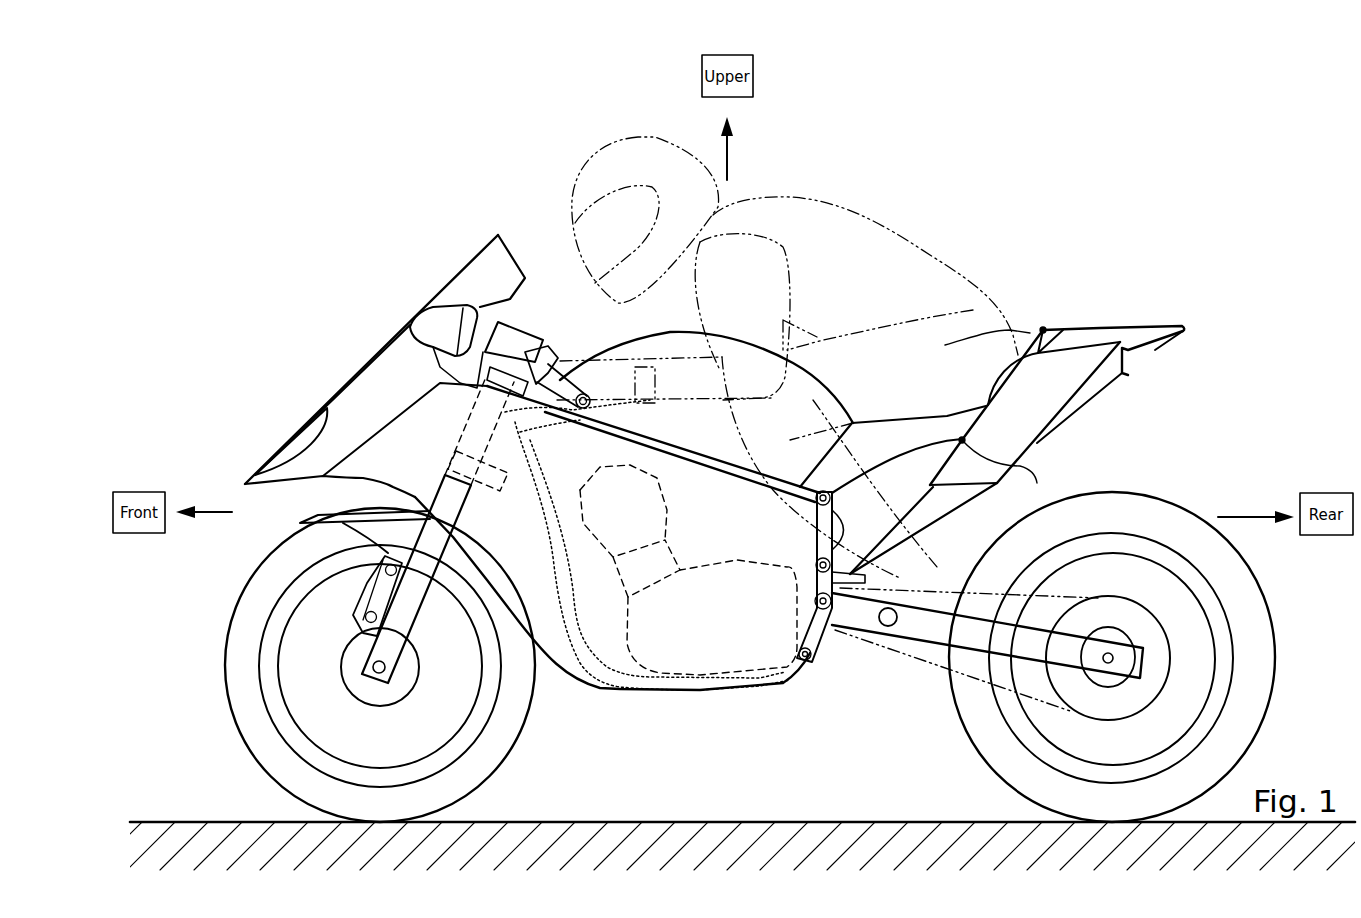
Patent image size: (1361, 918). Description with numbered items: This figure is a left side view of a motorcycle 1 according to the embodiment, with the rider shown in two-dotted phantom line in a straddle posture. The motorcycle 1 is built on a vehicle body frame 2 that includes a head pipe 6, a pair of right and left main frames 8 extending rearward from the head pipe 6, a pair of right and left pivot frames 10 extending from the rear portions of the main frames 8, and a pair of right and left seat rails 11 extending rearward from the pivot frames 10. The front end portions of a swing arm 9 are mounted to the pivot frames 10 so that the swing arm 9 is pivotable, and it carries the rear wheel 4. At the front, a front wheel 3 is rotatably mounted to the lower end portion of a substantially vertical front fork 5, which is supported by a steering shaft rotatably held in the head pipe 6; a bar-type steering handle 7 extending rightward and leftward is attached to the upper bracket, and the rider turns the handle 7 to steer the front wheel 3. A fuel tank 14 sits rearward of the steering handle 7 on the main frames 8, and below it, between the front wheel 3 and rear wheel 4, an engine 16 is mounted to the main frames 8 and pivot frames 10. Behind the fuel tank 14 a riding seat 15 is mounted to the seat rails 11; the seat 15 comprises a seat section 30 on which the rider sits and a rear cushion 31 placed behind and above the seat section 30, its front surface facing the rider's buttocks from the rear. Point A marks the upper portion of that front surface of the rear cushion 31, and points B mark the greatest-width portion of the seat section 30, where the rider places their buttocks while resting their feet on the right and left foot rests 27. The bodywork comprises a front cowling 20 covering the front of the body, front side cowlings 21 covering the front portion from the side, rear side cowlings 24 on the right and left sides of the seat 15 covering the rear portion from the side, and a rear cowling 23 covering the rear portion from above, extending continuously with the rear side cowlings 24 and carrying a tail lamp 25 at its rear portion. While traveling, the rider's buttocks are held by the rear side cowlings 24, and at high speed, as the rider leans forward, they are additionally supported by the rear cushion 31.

The motorcycle 1 is at (1162, 296).
The vehicle body frame 2 is at (483, 380).
The front wheel 3 is at (243, 583).
The rear wheel 4 is at (1266, 603).
The front fork 5 is at (453, 470).
The head pipe 6 is at (497, 433).
The steering handle 7 is at (563, 380).
The main frames 8 is at (617, 417).
The swing arm 9 is at (927, 624).
The pivot frames 10 is at (860, 577).
The seat rails 11 is at (937, 520).
The fuel tank 14 is at (755, 345).
The riding seat 15 is at (905, 333).
The engine 16 is at (628, 684).
The front cowling 20 is at (350, 400).
The front side cowlings 21 is at (557, 670).
The rear cowling 23 is at (1098, 328).
The rear side cowlings 24 is at (1033, 457).
The tail lamp 25 is at (1155, 350).
The foot rests 27 is at (880, 622).
The seat section 30 is at (943, 410).
The rear cushion 31 is at (950, 345).
The point A is at (1043, 328).
The points B is at (1037, 483).